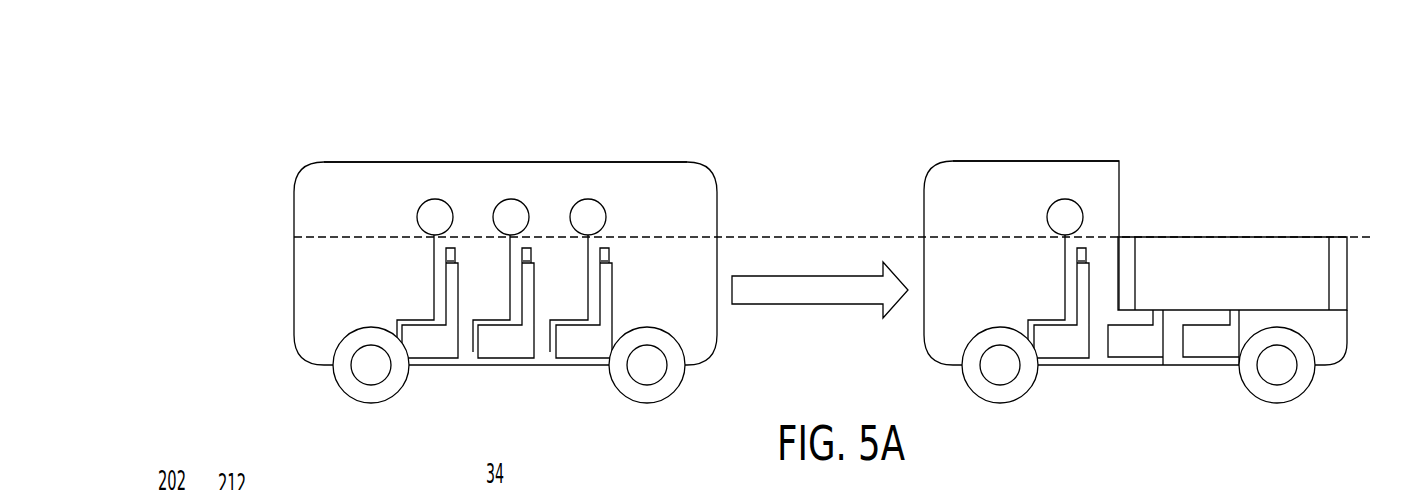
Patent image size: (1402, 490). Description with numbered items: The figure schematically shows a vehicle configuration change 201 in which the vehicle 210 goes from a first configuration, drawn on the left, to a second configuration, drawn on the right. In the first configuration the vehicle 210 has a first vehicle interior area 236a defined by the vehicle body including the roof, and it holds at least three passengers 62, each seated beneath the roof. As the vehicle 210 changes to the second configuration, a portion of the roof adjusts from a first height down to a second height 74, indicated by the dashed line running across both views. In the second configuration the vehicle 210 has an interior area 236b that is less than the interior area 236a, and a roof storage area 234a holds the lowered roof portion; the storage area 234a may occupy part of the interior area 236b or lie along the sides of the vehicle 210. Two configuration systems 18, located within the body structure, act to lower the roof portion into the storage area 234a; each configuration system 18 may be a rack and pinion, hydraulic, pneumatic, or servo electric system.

The vehicle configuration change 201 is at (310, 98).
The vehicle 210 is at (273, 198).
The passengers 62 is at (433, 288).
The first vehicle interior area 236a is at (305, 311).
The interior area 236b is at (1100, 183).
The second height 74 is at (795, 232).
The roof storage area 234a is at (1252, 287).
The configuration system 18 is at (1338, 312).